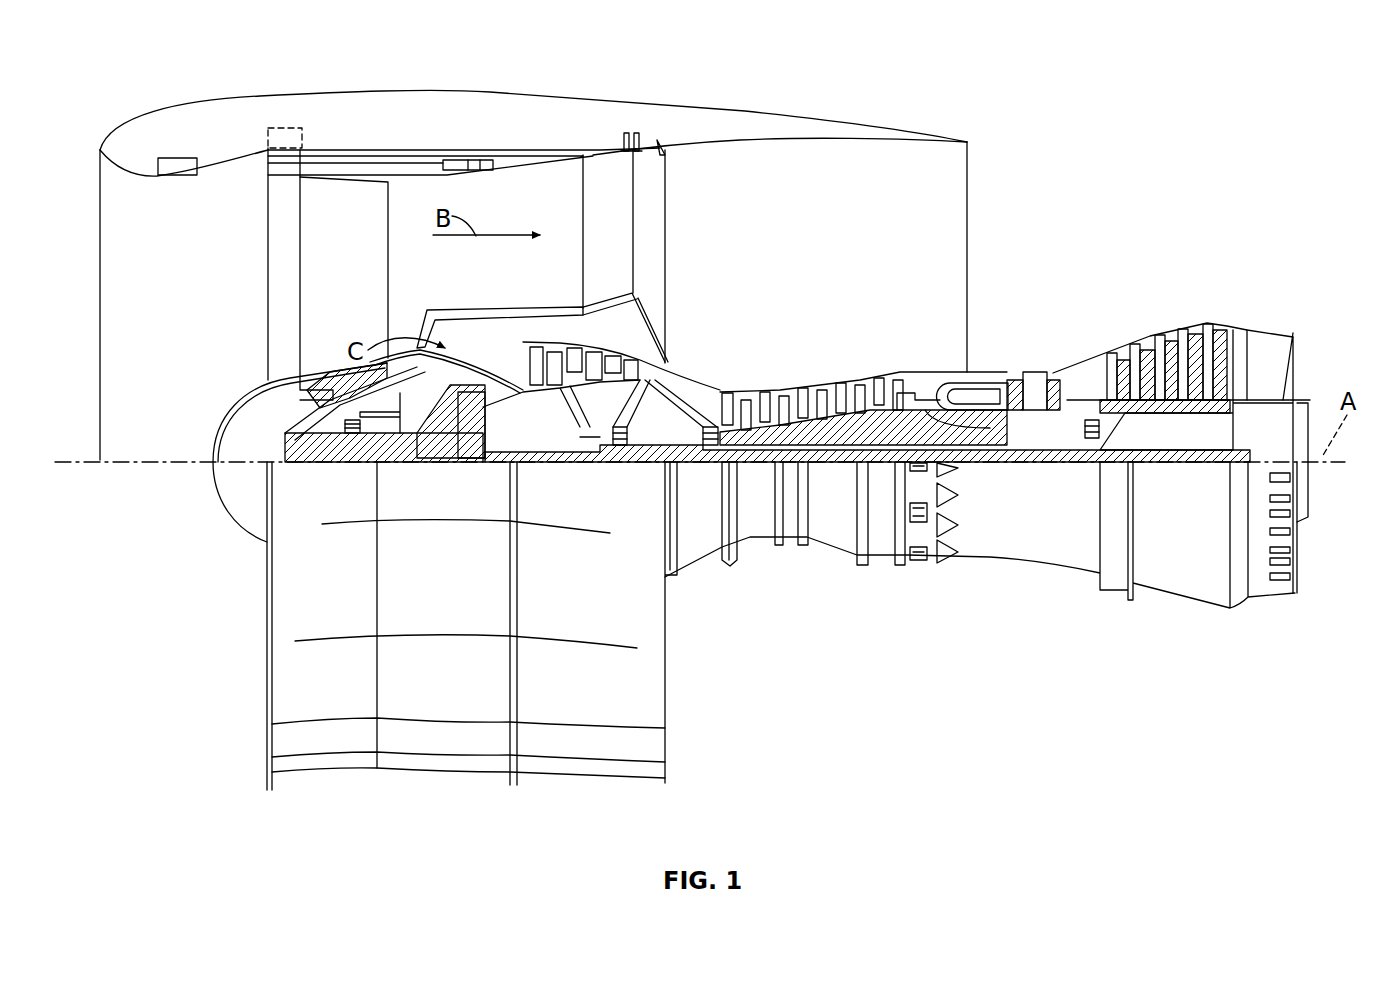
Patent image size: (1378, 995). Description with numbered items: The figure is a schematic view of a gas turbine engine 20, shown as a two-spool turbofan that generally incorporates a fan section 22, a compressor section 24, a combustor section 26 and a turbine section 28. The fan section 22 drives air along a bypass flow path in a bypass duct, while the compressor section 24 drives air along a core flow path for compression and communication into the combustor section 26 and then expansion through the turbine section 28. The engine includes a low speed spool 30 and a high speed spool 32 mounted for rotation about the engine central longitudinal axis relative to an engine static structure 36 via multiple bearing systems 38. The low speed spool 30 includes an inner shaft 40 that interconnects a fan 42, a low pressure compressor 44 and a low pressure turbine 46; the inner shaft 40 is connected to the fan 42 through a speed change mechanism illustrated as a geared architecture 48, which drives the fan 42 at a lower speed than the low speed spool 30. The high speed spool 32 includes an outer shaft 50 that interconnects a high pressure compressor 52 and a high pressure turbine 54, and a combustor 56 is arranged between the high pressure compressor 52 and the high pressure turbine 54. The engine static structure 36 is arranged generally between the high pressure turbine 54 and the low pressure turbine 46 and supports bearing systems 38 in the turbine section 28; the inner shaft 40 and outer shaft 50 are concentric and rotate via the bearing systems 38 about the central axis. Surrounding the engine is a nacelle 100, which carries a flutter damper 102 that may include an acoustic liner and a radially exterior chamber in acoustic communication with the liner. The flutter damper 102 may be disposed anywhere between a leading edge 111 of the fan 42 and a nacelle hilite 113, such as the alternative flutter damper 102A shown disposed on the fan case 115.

The gas turbine engine 20 is at (1095, 171).
The fan section 22 is at (384, 147).
The compressor section 24 is at (780, 281).
The combustor section 26 is at (993, 293).
The turbine section 28 is at (1109, 281).
The low speed spool 30 is at (849, 469).
The high speed spool 32 is at (897, 410).
The engine static structure 36 is at (880, 565).
The bearing systems 38 is at (352, 435).
The inner shaft 40 is at (684, 460).
The fan 42 is at (350, 284).
The low pressure compressor 44 is at (593, 350).
The low pressure turbine 46 is at (1170, 340).
The geared architecture 48 is at (473, 435).
The outer shaft 50 is at (988, 440).
The high pressure compressor 52 is at (810, 430).
The high pressure turbine 54 is at (1030, 372).
The combustor 56 is at (977, 397).
The nacelle 100 is at (440, 92).
The flutter damper 102 is at (178, 158).
The flutter damper 102A is at (285, 128).
The leading edge 111 is at (300, 212).
The nacelle hilite 113 is at (100, 150).
The fan case 115 is at (317, 147).